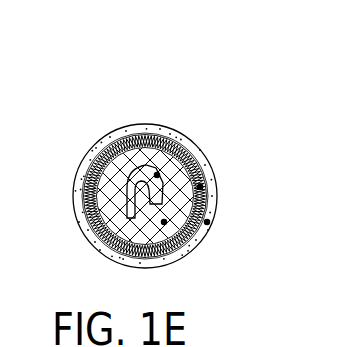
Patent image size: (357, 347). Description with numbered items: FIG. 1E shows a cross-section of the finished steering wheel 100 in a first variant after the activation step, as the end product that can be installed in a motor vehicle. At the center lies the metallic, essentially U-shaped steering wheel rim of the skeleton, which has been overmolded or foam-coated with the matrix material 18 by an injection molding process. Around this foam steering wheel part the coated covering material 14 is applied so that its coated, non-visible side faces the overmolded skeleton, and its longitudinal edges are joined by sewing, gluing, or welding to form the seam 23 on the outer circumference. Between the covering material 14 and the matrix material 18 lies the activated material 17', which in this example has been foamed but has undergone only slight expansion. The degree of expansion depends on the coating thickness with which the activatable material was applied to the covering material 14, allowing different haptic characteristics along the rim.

The steering wheel 100 is at (200, 111).
The activated material 17' is at (238, 169).
The seam 23 is at (238, 198).
The covering material 14 is at (209, 222).
The matrix material 18 is at (166, 223).